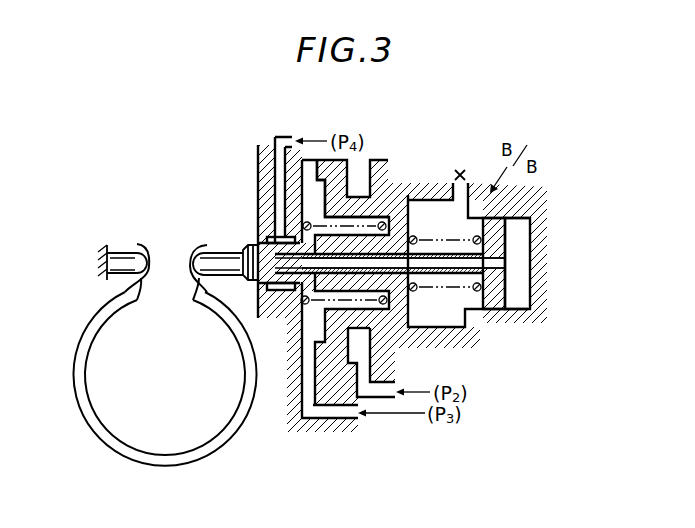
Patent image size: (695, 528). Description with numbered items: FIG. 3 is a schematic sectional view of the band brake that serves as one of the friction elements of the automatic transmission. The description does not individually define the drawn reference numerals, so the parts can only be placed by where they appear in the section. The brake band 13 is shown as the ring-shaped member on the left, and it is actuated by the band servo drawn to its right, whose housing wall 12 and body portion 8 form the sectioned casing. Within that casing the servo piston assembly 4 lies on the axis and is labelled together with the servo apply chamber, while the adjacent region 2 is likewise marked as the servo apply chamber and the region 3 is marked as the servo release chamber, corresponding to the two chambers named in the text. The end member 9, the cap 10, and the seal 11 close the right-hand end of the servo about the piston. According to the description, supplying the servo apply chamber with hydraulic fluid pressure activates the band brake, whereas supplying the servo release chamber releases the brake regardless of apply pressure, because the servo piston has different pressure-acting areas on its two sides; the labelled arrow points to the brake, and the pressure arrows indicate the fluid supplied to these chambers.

The lower actuator body (S/A) 2 is at (360, 347).
The upper passage body (S/R) 3 is at (312, 193).
The piston rod (S/A) 4 is at (520, 266).
The cylinder body 8 is at (398, 203).
The end plate 9 is at (497, 298).
The end cap 10 is at (538, 226).
The seal ring 11 is at (465, 290).
The housing wall 12 is at (298, 322).
The clamp ring 13 is at (77, 398).